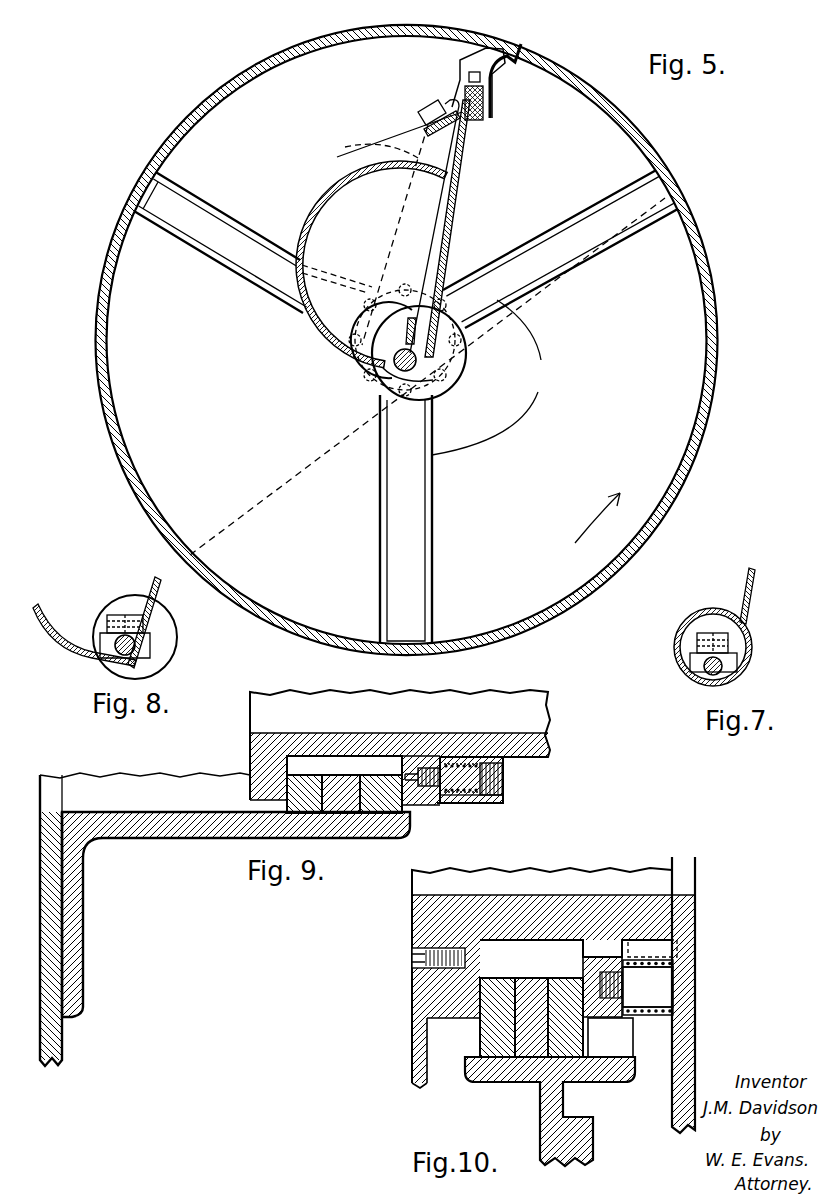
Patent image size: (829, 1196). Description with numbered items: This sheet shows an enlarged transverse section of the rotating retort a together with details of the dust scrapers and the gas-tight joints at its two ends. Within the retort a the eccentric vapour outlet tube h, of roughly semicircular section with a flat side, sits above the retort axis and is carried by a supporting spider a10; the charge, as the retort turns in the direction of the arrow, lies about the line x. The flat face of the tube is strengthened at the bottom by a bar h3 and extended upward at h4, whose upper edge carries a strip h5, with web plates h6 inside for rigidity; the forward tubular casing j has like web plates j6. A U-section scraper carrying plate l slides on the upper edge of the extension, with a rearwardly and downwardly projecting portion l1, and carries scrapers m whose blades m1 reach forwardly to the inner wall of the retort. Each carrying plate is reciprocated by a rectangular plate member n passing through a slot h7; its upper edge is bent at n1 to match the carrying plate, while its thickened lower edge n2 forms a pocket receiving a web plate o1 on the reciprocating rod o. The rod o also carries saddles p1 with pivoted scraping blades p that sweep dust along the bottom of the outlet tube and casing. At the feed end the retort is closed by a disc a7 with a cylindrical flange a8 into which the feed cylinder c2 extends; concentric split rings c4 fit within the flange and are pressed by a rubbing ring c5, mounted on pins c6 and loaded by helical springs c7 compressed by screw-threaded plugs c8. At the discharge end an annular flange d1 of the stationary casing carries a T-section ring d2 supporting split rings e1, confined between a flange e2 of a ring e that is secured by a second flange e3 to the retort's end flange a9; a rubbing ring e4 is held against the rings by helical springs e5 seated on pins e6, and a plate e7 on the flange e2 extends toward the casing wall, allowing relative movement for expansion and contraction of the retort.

In FIG. 5, the retort a is at (289, 52).
In FIG. 9, the disc a7 is at (50, 910).
In FIG. 9, the cylindrical flange a8 is at (163, 822).
In FIG. 10, the annular end flange a9 is at (673, 1067).
In FIG. 5, the supporting spider a10 is at (499, 377).
In FIG. 9, the feed cylinder c2 is at (375, 743).
In FIG. 9, the concentric split rings c4 is at (337, 773).
In FIG. 9, the rubbing ring c5 is at (424, 806).
In FIG. 9, the pins c6 is at (467, 797).
In FIG. 9, the helical springs c7 is at (453, 765).
In FIG. 9, the screw-threaded plugs c8 is at (500, 778).
In FIG. 10, the annular flange d1 is at (570, 1132).
In FIG. 10, the ring of T-cross-section d2 is at (552, 1103).
In FIG. 10, the ring e is at (563, 903).
In FIG. 10, the concentric split rings e1 is at (540, 977).
In FIG. 10, the flange e2 is at (442, 981).
In FIG. 10, the second flange e3 is at (648, 940).
In FIG. 10, the rubbing ring e4 is at (600, 1018).
In FIG. 10, the helical springs e5 is at (647, 1018).
In FIG. 10, the pins e6 is at (648, 987).
In FIG. 10, the plate e7 is at (412, 906).
In FIG. 5, the vapour outlet tube h is at (344, 195).
In FIG. 5, the strengthening bar h3 is at (445, 364).
In FIG. 5, the upward extension h4 is at (473, 145).
In FIG. 5, the strip metal h5 is at (477, 112).
In FIG. 5, the web plates h6 is at (437, 158).
In FIG. 5, the slot h7 is at (442, 175).
In FIG. 7, the tubular casing j is at (750, 640).
In FIG. 5, the web plates j6 is at (374, 143).
In FIG. 5, the scraper carrying plate l is at (480, 90).
In FIG. 5, the rearwardly projecting portion l1 is at (453, 112).
In FIG. 5, the scraper m is at (453, 102).
In FIG. 5, the blade m1 is at (503, 57).
In FIG. 5, the plate member n is at (448, 222).
In FIG. 5, the bent upper edge n1 is at (468, 140).
In FIG. 5, the thickened lower edge n2 is at (352, 352).
In FIG. 5, the reciprocating rod o is at (376, 386).
In FIG. 8, the reciprocating rod o is at (150, 660).
In FIG. 7, the reciprocating rod o is at (745, 668).
In FIG. 5, the web plates o1 is at (374, 372).
In FIG. 8, the scraping blade p is at (92, 652).
In FIG. 7, the scraping blade p is at (686, 666).
In FIG. 8, the saddle p1 is at (105, 658).
In FIG. 7, the saddle p1 is at (702, 678).
In FIG. 5, the charge position line x is at (427, 376).